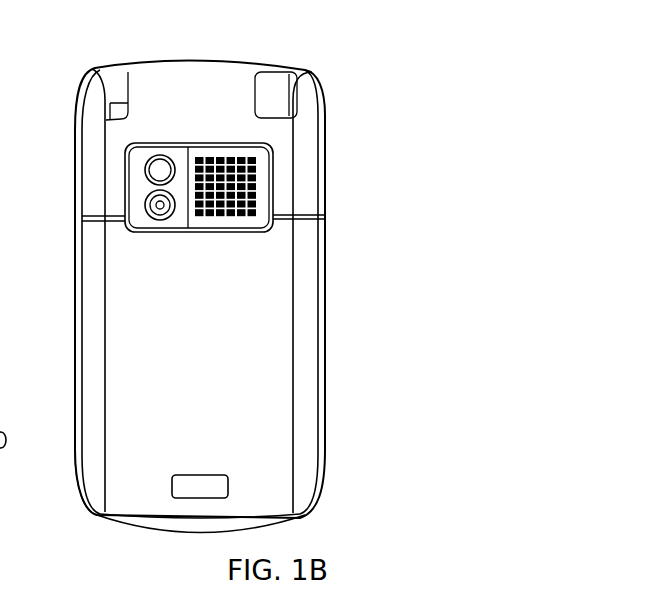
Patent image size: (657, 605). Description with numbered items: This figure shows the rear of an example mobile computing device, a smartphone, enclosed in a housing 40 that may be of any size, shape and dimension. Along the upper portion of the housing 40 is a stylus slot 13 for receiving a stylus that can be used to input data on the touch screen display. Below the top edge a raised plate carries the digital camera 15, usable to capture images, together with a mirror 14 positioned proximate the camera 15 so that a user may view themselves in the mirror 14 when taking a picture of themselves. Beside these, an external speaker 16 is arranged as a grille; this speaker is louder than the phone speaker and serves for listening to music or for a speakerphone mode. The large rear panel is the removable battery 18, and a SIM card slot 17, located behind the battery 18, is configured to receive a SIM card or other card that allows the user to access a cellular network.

The stylus slot 13 is at (100, 66).
The mirror 14 is at (144, 169).
The digital camera 15 is at (148, 220).
The external speaker 16 is at (261, 185).
The SIM card slot 17 is at (272, 435).
The removable battery 18 is at (202, 501).
The housing 40 is at (73, 511).